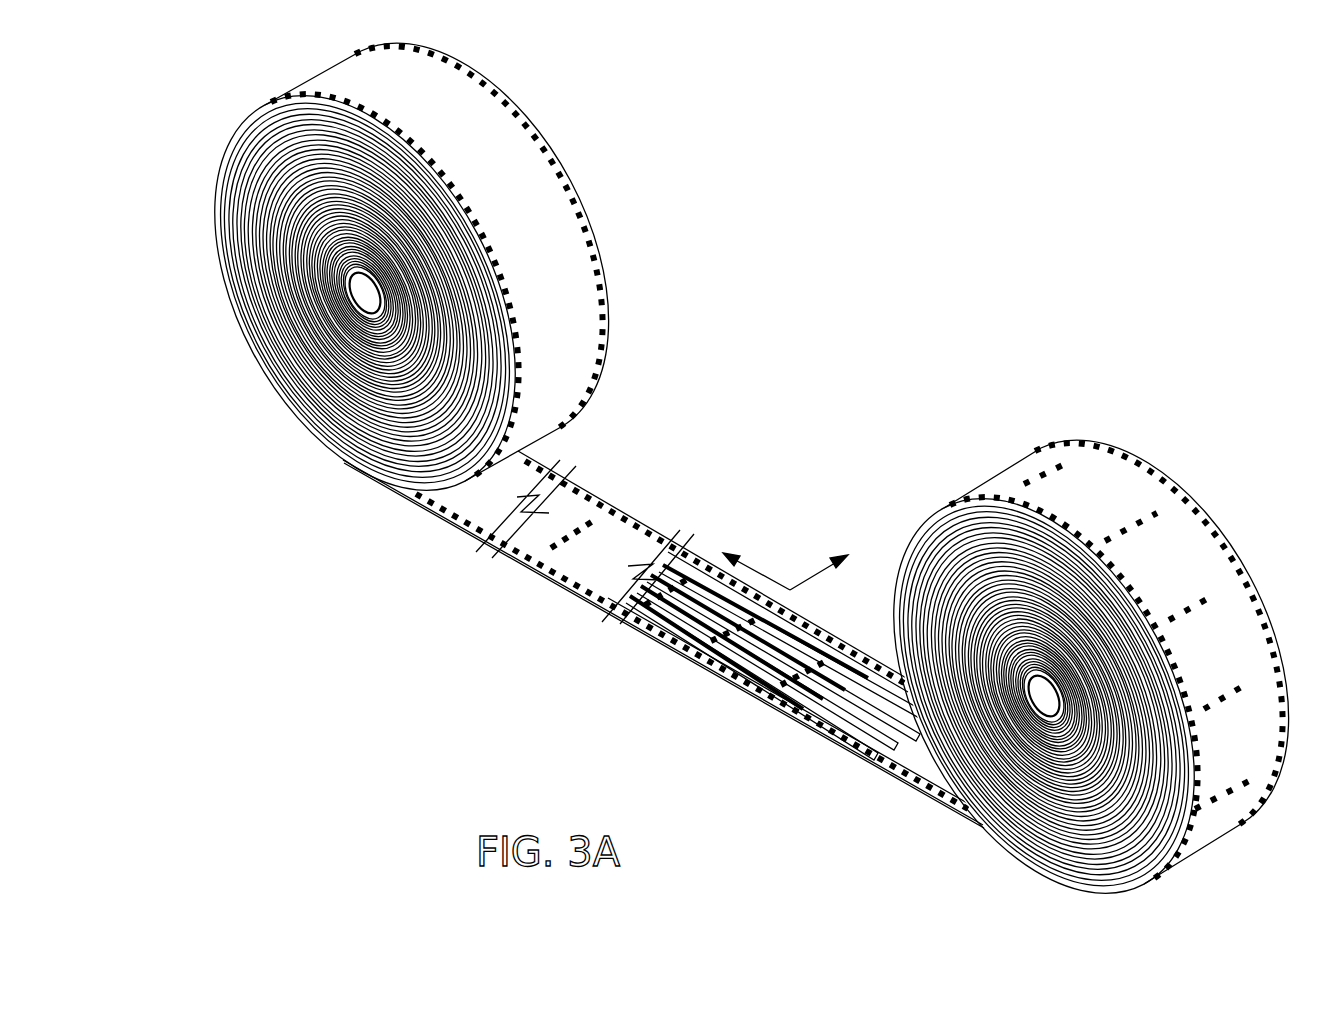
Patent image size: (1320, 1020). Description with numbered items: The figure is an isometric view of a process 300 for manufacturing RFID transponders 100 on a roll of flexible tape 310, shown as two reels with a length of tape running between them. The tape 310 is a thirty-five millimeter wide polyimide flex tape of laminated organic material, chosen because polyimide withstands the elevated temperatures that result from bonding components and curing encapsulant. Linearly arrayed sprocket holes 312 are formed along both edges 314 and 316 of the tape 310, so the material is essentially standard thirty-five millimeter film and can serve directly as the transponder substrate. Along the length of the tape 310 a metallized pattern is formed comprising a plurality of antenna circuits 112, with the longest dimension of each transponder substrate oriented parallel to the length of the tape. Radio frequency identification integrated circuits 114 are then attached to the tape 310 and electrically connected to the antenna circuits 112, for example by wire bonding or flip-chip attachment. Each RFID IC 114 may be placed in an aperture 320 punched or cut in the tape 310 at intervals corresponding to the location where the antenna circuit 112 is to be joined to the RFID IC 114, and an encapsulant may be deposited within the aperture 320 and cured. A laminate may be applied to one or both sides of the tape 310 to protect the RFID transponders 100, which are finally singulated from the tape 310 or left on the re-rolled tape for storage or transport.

The process 300 is at (721, 493).
The flexible tape 310 is at (431, 292).
The sprocket holes 312 is at (572, 192).
The edge 314 is at (420, 503).
The edge 316 is at (487, 460).
The aperture 320 is at (585, 512).
The RFID transponder 100 is at (774, 682).
The antenna circuit 112 is at (717, 643).
The radio frequency identification integrated circuit 114 is at (787, 673).